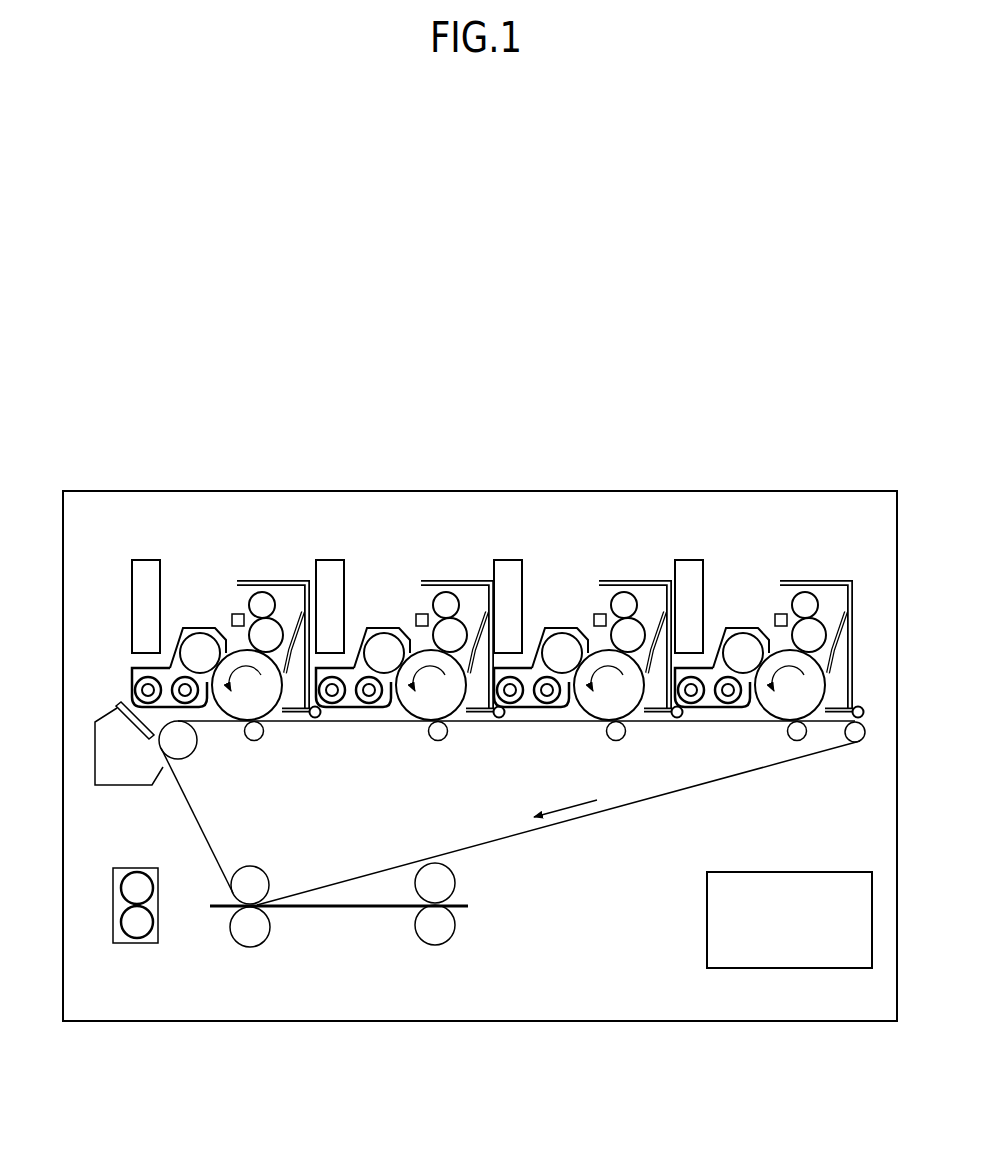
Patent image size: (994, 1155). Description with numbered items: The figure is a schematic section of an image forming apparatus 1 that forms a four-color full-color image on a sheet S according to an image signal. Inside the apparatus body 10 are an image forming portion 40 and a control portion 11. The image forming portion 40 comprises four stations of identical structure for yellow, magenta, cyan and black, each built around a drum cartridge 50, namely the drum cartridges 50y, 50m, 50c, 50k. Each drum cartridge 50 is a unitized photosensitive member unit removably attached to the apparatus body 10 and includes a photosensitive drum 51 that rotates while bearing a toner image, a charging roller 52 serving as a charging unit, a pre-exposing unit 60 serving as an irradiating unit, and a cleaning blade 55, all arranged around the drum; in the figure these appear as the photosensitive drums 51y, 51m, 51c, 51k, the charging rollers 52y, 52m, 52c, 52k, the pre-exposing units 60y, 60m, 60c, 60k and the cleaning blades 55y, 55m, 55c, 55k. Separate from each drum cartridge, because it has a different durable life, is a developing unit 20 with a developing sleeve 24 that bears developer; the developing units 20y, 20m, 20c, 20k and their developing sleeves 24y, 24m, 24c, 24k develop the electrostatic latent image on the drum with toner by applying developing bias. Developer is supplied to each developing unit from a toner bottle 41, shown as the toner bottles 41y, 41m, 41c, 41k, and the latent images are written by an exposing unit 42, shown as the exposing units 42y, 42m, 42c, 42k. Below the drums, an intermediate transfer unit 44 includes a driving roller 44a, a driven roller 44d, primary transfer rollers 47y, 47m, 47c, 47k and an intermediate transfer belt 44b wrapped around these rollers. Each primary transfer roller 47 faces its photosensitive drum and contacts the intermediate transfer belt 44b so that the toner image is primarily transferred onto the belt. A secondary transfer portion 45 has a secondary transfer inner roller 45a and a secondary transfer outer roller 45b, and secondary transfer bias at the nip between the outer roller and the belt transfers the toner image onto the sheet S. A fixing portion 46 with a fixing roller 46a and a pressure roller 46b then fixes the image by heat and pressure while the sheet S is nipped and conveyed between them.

The image forming apparatus 1 is at (665, 362).
The apparatus body 10 is at (733, 1021).
The control portion 11 is at (797, 968).
The developing unit 20 is at (117, 680).
The developing unit 20y is at (134, 667).
The developing unit 20m is at (317, 667).
The developing unit 20c is at (495, 667).
The developing unit 20k is at (677, 667).
The developing sleeve 24 is at (723, 565).
The developing sleeve 24y is at (198, 636).
The developing sleeve 24m is at (383, 638).
The developing sleeve 24c is at (561, 638).
The developing sleeve 24k is at (742, 638).
The image forming portion 40 is at (115, 517).
The toner bottle 41 is at (508, 523).
The toner bottle 41y is at (147, 560).
The toner bottle 41m is at (330, 560).
The toner bottle 41c is at (508, 560).
The toner bottle 41k is at (688, 560).
The exposing unit 42 is at (762, 537).
The exposing unit 42y is at (230, 615).
The exposing unit 42m is at (416, 618).
The exposing unit 42c is at (594, 618).
The exposing unit 42k is at (778, 620).
The intermediate transfer unit 44 is at (493, 853).
The driving roller 44a is at (183, 760).
The intermediate transfer belt 44b is at (393, 867).
The driven roller 44d is at (860, 742).
The secondary transfer portion 45 is at (295, 930).
The secondary transfer inner roller 45a is at (265, 878).
The secondary transfer outer roller 45b is at (253, 947).
The fixing portion 46 is at (168, 928).
The fixing roller 46a is at (138, 872).
The pressure roller 46b is at (137, 938).
The primary transfer roller 47 is at (258, 770).
The primary transfer roller 47y is at (256, 742).
The primary transfer roller 47m is at (440, 742).
The primary transfer roller 47c is at (616, 742).
The primary transfer roller 47k is at (798, 742).
The drum cartridge 50 is at (843, 437).
The drum cartridge 50y is at (248, 538).
The drum cartridge 50m is at (425, 538).
The drum cartridge 50c is at (608, 538).
The drum cartridge 50k is at (793, 538).
The photosensitive drum 51 is at (722, 810).
The photosensitive drum 51y is at (218, 710).
The photosensitive drum 51m is at (405, 712).
The photosensitive drum 51c is at (585, 715).
The photosensitive drum 51k is at (773, 718).
The charging roller 52 is at (837, 550).
The charging roller 52y is at (276, 628).
The charging roller 52m is at (461, 628).
The charging roller 52c is at (638, 628).
The charging roller 52k is at (826, 618).
The cleaning blade 55 is at (875, 650).
The cleaning blade 55y is at (301, 702).
The cleaning blade 55m is at (493, 722).
The cleaning blade 55c is at (663, 717).
The cleaning blade 55k is at (833, 667).
The pre-exposing unit 60 is at (323, 780).
The pre-exposing unit 60y is at (290, 713).
The pre-exposing unit 60m is at (474, 713).
The pre-exposing unit 60c is at (650, 713).
The pre-exposing unit 60k is at (827, 713).
The sheet S is at (350, 910).